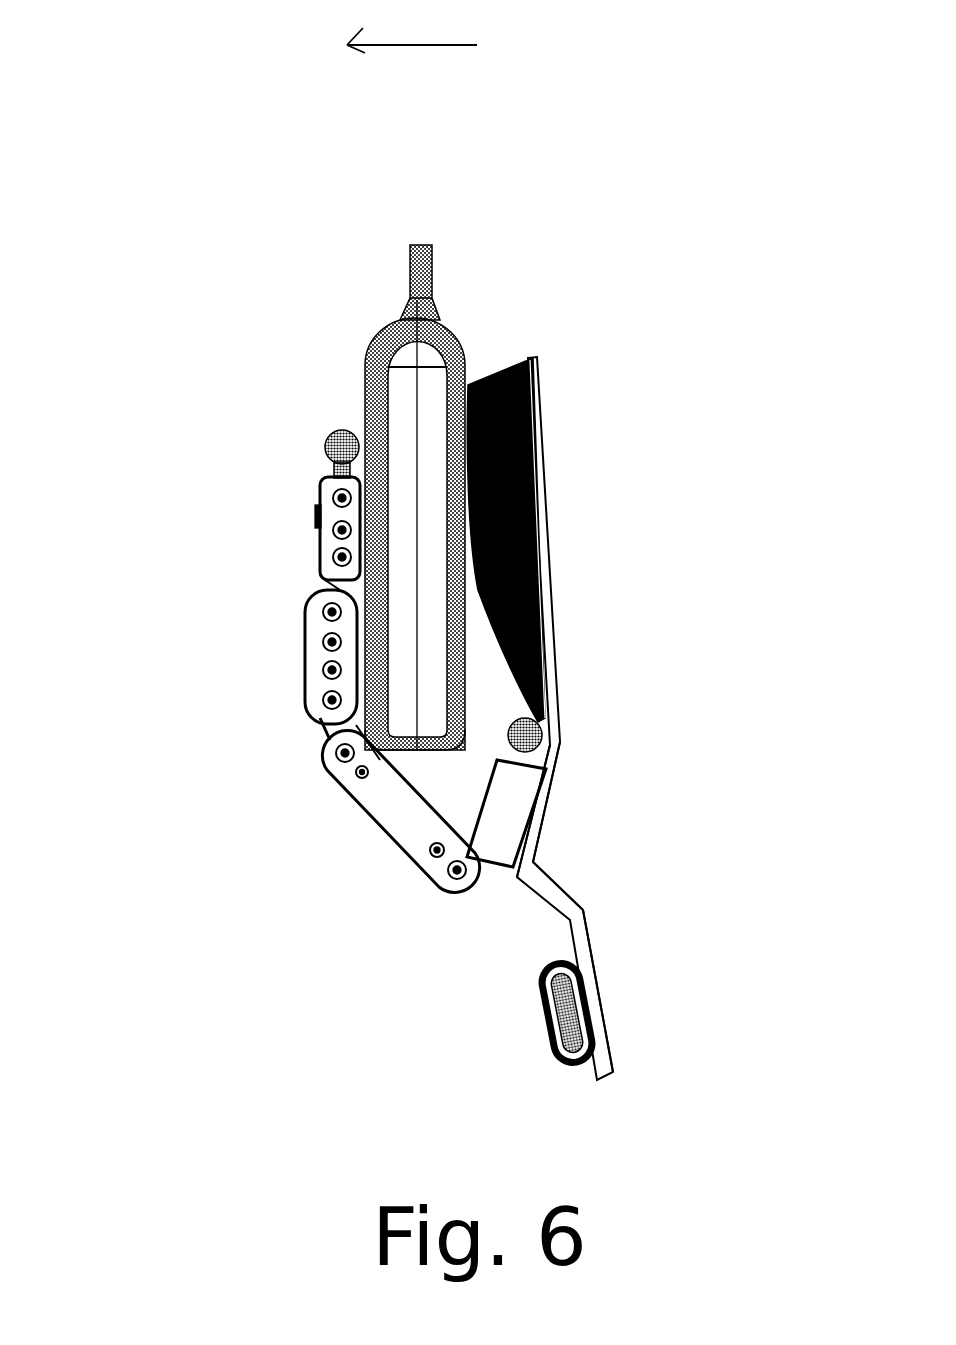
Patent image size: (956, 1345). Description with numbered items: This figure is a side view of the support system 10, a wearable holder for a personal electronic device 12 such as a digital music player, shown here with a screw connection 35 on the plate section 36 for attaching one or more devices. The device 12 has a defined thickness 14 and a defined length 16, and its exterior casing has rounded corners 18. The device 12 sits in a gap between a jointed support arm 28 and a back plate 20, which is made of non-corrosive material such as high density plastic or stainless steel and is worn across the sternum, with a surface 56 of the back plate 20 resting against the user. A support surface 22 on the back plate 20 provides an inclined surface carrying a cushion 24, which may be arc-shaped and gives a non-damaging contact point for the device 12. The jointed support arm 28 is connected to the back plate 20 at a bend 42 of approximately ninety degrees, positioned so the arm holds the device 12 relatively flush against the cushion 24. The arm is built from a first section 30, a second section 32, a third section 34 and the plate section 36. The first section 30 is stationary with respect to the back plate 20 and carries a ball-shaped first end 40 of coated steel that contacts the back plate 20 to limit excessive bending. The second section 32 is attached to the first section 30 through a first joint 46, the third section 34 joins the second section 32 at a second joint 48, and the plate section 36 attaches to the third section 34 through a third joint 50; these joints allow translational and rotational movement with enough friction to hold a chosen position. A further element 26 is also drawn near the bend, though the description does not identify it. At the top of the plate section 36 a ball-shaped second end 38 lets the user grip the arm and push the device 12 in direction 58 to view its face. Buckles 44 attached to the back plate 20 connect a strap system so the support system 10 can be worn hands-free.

The support system 10 is at (700, 200).
The device 12 is at (368, 338).
The thickness 14 is at (367, 362).
The length 16 is at (417, 245).
The rounded corners 18 is at (450, 740).
The back plate 20 is at (550, 550).
The support surface 22 is at (543, 450).
The cushion 24 is at (557, 632).
The pivot boss 26 is at (568, 763).
The jointed support arm 28 is at (253, 484).
The first section 30 is at (537, 843).
The second section 32 is at (407, 833).
The third section 34 is at (310, 645).
The screw connection 35 is at (320, 527).
The plate section 36 is at (320, 538).
The second end 38 is at (325, 438).
The first end 40 is at (560, 757).
The bend 42 is at (513, 867).
The buckles 44 is at (553, 1040).
The first joint 46 is at (457, 897).
The second joint 48 is at (327, 772).
The third joint 50 is at (323, 608).
The surface 56 is at (603, 997).
The direction 58 is at (412, 26).